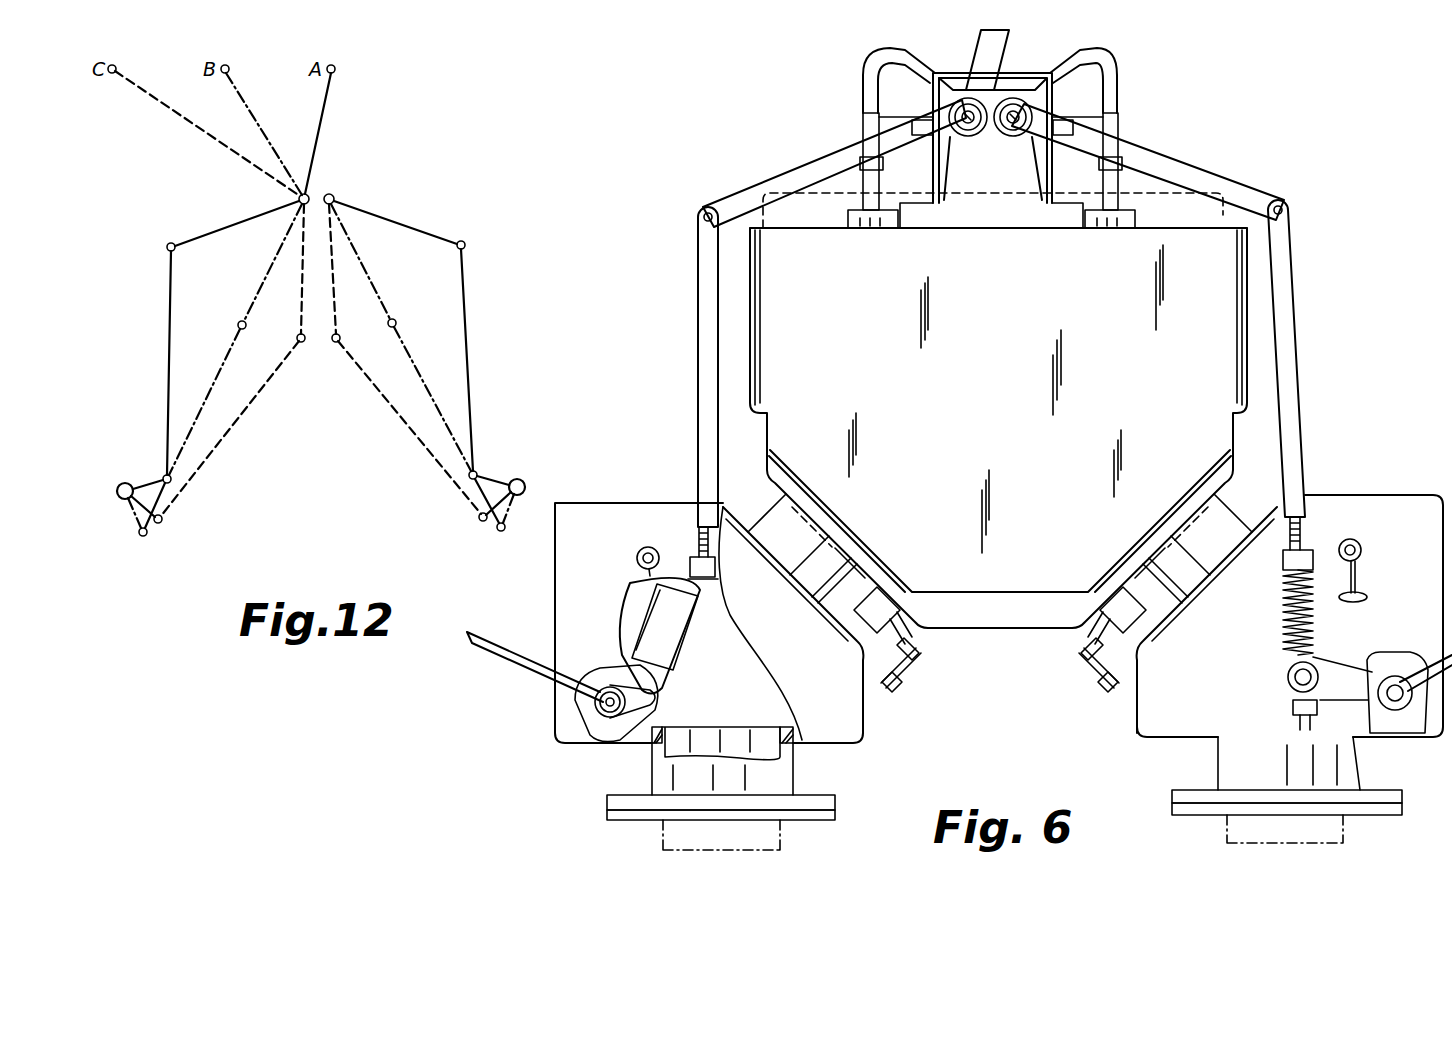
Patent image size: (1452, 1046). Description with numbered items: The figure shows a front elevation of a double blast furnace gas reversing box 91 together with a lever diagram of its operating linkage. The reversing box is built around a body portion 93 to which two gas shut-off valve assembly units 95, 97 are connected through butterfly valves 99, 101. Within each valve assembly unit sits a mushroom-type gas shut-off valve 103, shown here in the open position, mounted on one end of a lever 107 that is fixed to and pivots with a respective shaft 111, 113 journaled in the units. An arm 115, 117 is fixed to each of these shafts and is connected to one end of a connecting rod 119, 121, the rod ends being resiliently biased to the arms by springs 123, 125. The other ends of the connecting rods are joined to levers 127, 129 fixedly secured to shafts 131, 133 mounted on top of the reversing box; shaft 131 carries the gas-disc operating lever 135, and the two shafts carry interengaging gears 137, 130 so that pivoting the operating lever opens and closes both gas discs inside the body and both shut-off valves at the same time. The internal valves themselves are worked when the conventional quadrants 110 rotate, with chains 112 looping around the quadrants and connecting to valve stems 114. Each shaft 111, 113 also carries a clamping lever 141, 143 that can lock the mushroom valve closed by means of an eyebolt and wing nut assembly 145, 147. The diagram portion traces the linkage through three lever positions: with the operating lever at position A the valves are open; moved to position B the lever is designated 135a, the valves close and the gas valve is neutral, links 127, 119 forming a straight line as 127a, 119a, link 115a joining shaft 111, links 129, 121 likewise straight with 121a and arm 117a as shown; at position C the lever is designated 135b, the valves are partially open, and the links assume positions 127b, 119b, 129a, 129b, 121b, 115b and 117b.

In FIG. 6, the double blast furnace gas reversing box 91 is at (693, 302).
In FIG. 6, the double blast furnace gas reversing box body portion 93 is at (767, 352).
In FIG. 6, the gas shut-off valve assembly unit 95 is at (847, 720).
In FIG. 6, the gas shut-off valve assembly unit 97 is at (1157, 717).
In FIG. 6, the butterfly valve 99 is at (827, 547).
In FIG. 6, the butterfly valve 101 is at (1173, 543).
In FIG. 6, the gas shut-off valve 103 is at (670, 652).
In FIG. 6, the lever 107 is at (648, 627).
In FIG. 6, the quadrants 110 is at (1123, 78).
In FIG. 12, the shaft 111 is at (125, 483).
In FIG. 6, the shaft 111 is at (603, 707).
In FIG. 6, the chains 112 is at (1120, 118).
In FIG. 12, the shaft 113 is at (523, 482).
In FIG. 6, the shaft 113 is at (1388, 702).
In FIG. 6, the valve stems 114 is at (870, 186).
In FIG. 12, the arm 115 is at (162, 477).
In FIG. 6, the arm 115 is at (658, 697).
In FIG. 12, the link position 115a is at (123, 503).
In FIG. 12, the link position 115b is at (162, 515).
In FIG. 12, the arm 117 is at (495, 477).
In FIG. 6, the arm 117 is at (1337, 670).
In FIG. 12, the link position 117a is at (503, 520).
In FIG. 12, the link position 117b is at (478, 514).
In FIG. 12, the connecting rod 119 is at (169, 350).
In FIG. 6, the connecting rod 119 is at (705, 402).
In FIG. 12, the link position 119a is at (233, 342).
In FIG. 12, the link position 119b is at (245, 413).
In FIG. 12, the connecting rod 121 is at (474, 355).
In FIG. 6, the connecting rod 121 is at (1287, 372).
In FIG. 12, the link position 121a is at (400, 343).
In FIG. 12, the link position 121b is at (400, 421).
In FIG. 6, the spring 123 is at (707, 580).
In FIG. 6, the spring 125 is at (1290, 602).
In FIG. 12, the lever 127 is at (223, 232).
In FIG. 6, the lever 127 is at (820, 170).
In FIG. 12, the link position 127a is at (277, 251).
In FIG. 12, the link position 127b is at (301, 286).
In FIG. 12, the lever 129 is at (404, 222).
In FIG. 6, the lever 129 is at (1165, 160).
In FIG. 12, the link position 129a is at (356, 259).
In FIG. 12, the link position 129b is at (334, 279).
In FIG. 6, the gear 130 is at (1013, 95).
In FIG. 6, the shaft 131 is at (968, 119).
In FIG. 6, the shaft 133 is at (1013, 120).
In FIG. 12, the gas-disc operating lever 135 is at (320, 130).
In FIG. 6, the gas-disc operating lever 135 is at (983, 37).
In FIG. 12, the lever position 135a is at (267, 144).
In FIG. 12, the lever position 135b is at (200, 129).
In FIG. 6, the gear 137 is at (968, 95).
In FIG. 6, the clamping lever 141 is at (532, 672).
In FIG. 6, the clamping lever 143 is at (1413, 647).
In FIG. 6, the eyebolt and wing nut assembly 145 is at (647, 572).
In FIG. 6, the eyebolt and wing nut assembly 147 is at (1353, 567).